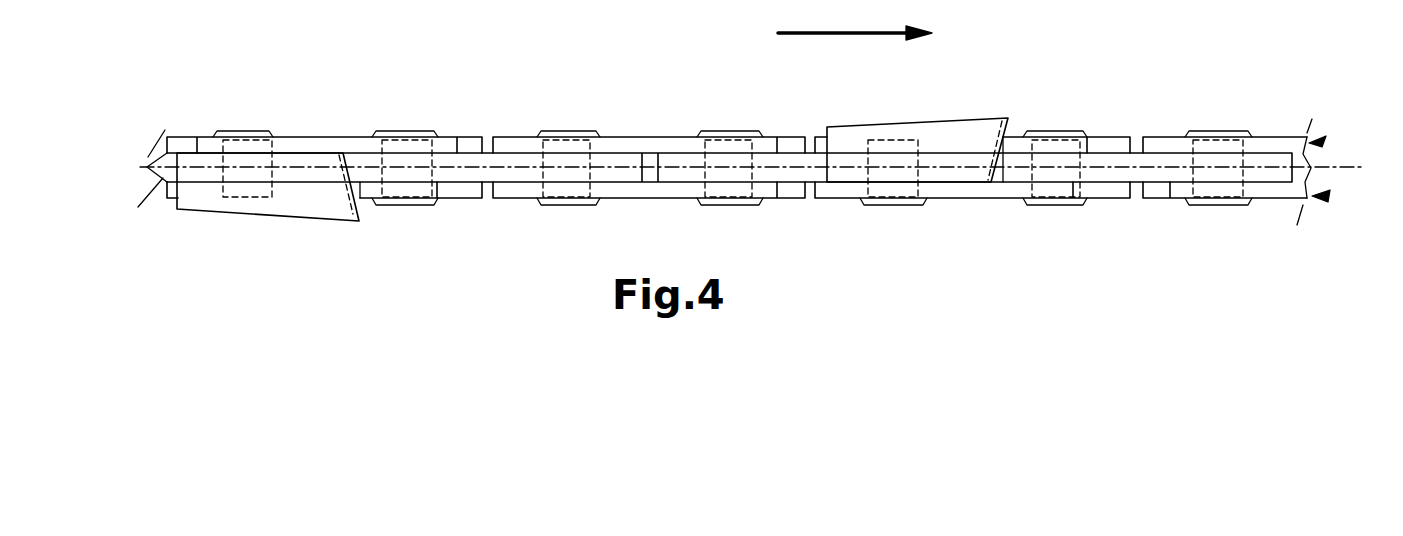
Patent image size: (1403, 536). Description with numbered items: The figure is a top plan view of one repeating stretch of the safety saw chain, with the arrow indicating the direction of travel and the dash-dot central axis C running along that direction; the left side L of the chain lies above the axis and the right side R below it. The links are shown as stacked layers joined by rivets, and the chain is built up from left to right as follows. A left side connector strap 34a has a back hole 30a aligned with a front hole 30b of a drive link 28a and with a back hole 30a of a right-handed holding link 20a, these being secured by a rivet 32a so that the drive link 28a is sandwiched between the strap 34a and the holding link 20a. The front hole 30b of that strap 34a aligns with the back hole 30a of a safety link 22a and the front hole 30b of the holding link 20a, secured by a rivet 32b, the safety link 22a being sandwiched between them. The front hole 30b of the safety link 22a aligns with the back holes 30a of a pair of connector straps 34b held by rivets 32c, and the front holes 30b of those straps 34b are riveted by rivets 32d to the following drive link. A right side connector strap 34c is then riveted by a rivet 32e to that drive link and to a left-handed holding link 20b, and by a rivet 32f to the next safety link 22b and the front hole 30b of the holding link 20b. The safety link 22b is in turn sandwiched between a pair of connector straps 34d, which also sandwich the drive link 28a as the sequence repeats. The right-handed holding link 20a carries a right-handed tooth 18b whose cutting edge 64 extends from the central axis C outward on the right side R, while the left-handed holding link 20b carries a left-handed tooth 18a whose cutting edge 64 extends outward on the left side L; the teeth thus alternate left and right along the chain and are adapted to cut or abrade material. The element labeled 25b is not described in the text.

The left-handed tooth 18a is at (925, 142).
The right-handed tooth 18b is at (322, 208).
The right-handed holding link 20a is at (470, 190).
The left-handed holding link 20b is at (1070, 147).
The safety link 22a is at (567, 165).
The safety link 22b is at (1163, 166).
The central rod 25b is at (818, 175).
The drive link 28a is at (160, 164).
The back hole 30a is at (238, 252).
The front hole 30b is at (207, 97).
The rivet 32a is at (273, 132).
The rivet 32b is at (397, 130).
The rivet 32c is at (540, 131).
The rivet 32d is at (707, 131).
The rivet 32e is at (893, 202).
The rivet 32f is at (1060, 131).
The left side connector strap 34a is at (338, 148).
The connector straps 34b is at (770, 140).
The right side connector strap 34c is at (997, 192).
The connector straps 34d is at (1273, 147).
The cutting edge 64 is at (362, 198).
The left side L is at (1320, 142).
The central axis C is at (1328, 165).
The right side R is at (1324, 196).